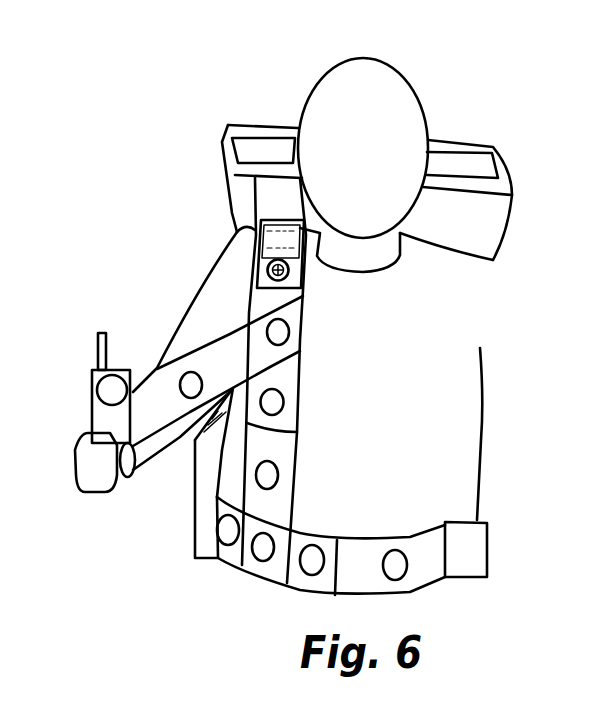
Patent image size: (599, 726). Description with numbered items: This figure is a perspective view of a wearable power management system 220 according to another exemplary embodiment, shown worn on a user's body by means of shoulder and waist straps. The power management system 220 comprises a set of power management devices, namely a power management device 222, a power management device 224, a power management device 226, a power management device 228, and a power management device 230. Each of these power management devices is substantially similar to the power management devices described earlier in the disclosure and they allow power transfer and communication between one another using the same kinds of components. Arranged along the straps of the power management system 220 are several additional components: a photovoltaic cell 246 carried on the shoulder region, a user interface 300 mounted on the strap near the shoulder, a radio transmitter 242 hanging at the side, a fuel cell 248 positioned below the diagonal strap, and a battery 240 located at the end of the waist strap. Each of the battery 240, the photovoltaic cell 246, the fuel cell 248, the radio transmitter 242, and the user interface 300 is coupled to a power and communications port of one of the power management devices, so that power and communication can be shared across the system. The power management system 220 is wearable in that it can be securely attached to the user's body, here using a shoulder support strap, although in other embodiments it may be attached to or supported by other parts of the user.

The power management system 220 is at (301, 338).
The power management device 222 is at (282, 375).
The power management device 224 is at (210, 353).
The power management device 226 is at (297, 461).
The power management device 228 is at (228, 552).
The power management device 230 is at (412, 537).
The battery 240 is at (472, 535).
The radio transmitter 242 is at (92, 392).
The photovoltaic cell 246 is at (258, 133).
The fuel cell 248 is at (207, 507).
The user interface 300 is at (257, 258).